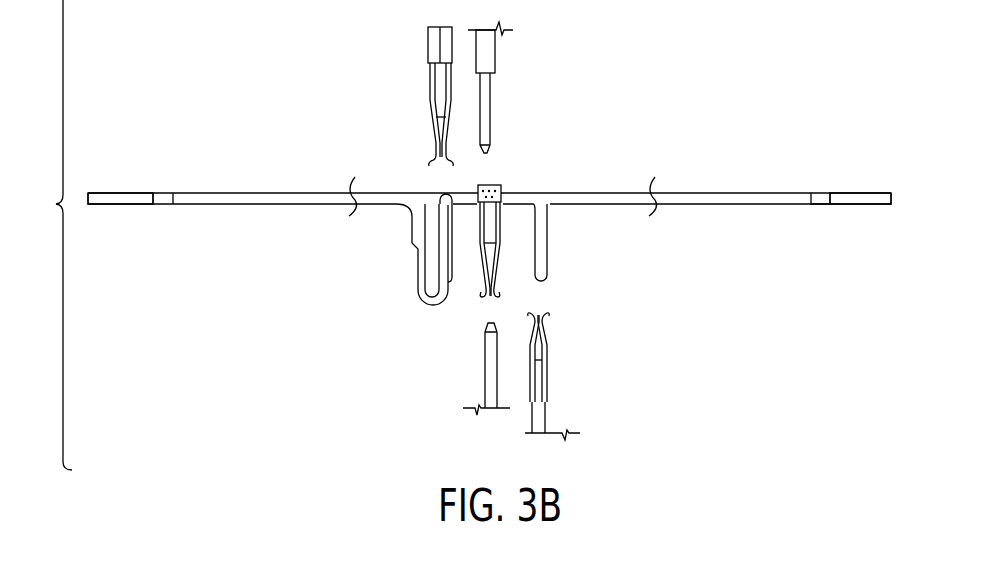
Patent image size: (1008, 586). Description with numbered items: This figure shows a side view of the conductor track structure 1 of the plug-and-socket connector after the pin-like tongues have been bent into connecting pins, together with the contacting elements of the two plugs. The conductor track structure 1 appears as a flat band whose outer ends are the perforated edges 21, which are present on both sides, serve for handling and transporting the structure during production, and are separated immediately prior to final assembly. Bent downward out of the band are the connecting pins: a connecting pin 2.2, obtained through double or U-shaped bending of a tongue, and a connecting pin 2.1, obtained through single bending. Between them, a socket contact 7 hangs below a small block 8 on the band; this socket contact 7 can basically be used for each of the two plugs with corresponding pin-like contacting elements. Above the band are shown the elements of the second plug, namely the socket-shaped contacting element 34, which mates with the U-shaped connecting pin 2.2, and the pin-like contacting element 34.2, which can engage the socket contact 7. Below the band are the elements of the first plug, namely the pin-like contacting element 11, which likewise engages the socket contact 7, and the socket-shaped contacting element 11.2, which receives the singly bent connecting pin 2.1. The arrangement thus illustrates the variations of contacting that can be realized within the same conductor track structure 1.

The conductor track structure 1 is at (745, 158).
The perforated edge 21 is at (104, 193).
The connecting pin 2.2 is at (428, 195).
The connecting pin 2.1 is at (548, 272).
The contact block 8 is at (503, 187).
The socket contact 7 is at (478, 270).
The socket-shaped contacting element 34 is at (431, 122).
The pin-like contacting element 34.2 is at (495, 112).
The pin-like contacting element 11 is at (483, 378).
The socket-shaped contacting element 11.2 is at (550, 378).